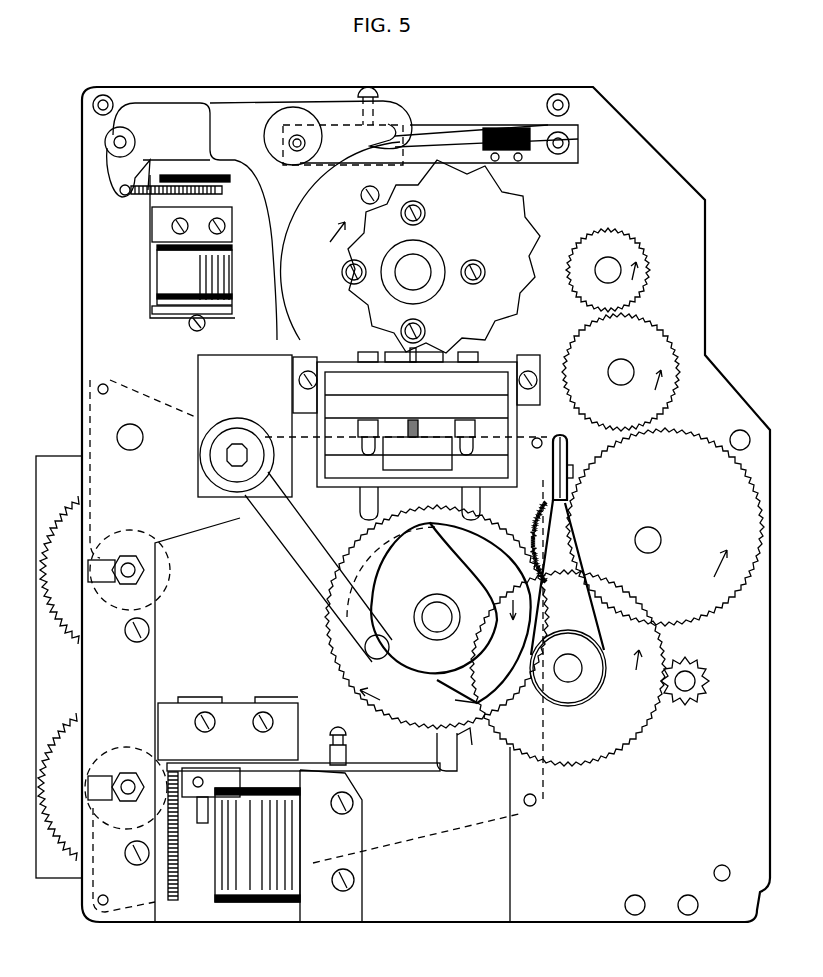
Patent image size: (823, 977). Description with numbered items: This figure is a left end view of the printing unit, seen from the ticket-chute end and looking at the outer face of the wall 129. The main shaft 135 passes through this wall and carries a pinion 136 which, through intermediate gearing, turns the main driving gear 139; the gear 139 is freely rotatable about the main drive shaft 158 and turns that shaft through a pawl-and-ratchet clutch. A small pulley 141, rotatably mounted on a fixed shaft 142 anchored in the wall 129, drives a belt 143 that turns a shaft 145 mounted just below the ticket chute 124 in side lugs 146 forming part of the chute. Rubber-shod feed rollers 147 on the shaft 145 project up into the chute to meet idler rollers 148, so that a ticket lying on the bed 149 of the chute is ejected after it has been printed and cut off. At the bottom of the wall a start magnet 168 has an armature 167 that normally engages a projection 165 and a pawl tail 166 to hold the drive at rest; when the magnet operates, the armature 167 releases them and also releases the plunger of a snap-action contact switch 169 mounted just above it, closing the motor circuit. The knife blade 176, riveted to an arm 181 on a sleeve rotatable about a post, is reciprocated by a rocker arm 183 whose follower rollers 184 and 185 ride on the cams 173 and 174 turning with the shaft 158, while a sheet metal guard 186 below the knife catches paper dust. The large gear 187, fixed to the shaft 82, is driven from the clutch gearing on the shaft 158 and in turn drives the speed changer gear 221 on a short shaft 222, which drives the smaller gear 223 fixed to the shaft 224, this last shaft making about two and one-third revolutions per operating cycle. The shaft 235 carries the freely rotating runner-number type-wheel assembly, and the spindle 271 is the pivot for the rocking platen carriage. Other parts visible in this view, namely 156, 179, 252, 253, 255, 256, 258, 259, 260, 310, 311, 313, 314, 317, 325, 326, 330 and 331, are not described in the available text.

The shaft 82 is at (648, 540).
The ticket chute 124 is at (500, 380).
The wall 129 is at (455, 90).
The main shaft 135 is at (702, 665).
The pinion 136 is at (700, 690).
The main driving gear 139 is at (325, 622).
The small pulley 141 is at (592, 675).
The fixed shaft 142 is at (568, 680).
The belt 143 is at (578, 560).
The shaft 145 is at (574, 469).
The side lugs 146 is at (530, 498).
The feed rollers 147 is at (362, 508).
The idler rollers 148 is at (368, 425).
The bed 149 is at (390, 462).
The switch actuator pin 156 is at (424, 428).
The main drive shaft 158 is at (436, 608).
The projection 165 is at (460, 752).
The tail 166 is at (437, 745).
The armature 167 is at (418, 770).
The start magnet 168 is at (280, 842).
The contact switch 169 is at (235, 710).
The cam 173 is at (460, 700).
The cam 174 is at (488, 640).
The knife blade 176 is at (278, 430).
The mounting bracket 179 is at (240, 372).
The arm 181 is at (276, 430).
The rocker arm 183 is at (280, 552).
The cam follower roller 184 is at (380, 655).
The cam follower roller 185 is at (440, 535).
The sheet metal guard 186 is at (200, 542).
The large gear 187 is at (708, 445).
The speed changer gear 221 is at (655, 325).
The short shaft 222 is at (630, 378).
The gear 223 is at (648, 257).
The shaft 224 is at (596, 262).
The shaft 235 is at (420, 278).
The ratchet wheel 252 is at (482, 200).
The screw 253 is at (500, 215).
The housing 255 is at (248, 112).
The solenoid 256 is at (170, 278).
The pivot lever 258 is at (105, 142).
The spring 259 is at (140, 196).
The lever 260 is at (462, 135).
The spindle 271 is at (143, 437).
The side plate 310 is at (68, 456).
The block 311 is at (90, 575).
The sector gear 313 is at (55, 715).
The nut 314 is at (135, 550).
The screw 317 is at (124, 620).
The hidden lever 325 is at (152, 405).
The pivot hole 326 is at (106, 373).
The hidden link 330 is at (536, 805).
The pivot hole 331 is at (107, 896).